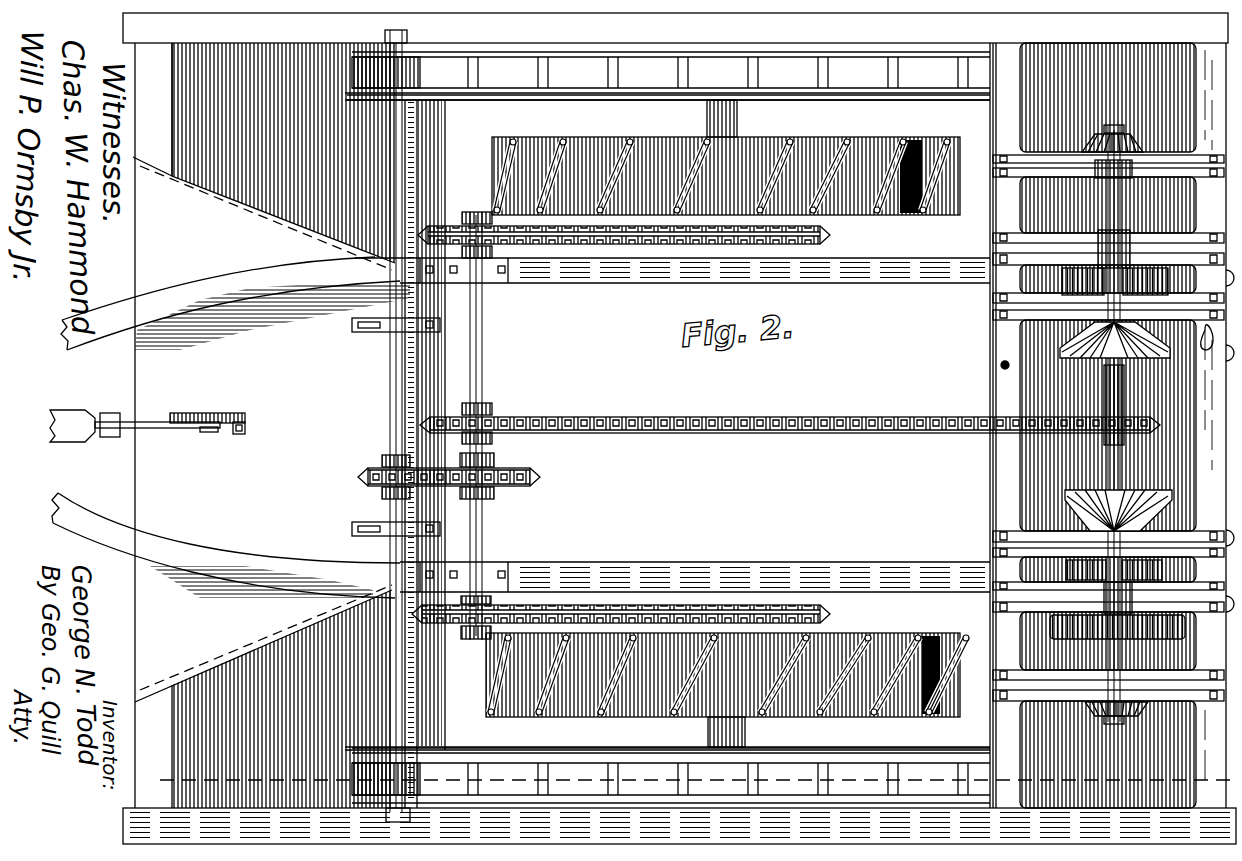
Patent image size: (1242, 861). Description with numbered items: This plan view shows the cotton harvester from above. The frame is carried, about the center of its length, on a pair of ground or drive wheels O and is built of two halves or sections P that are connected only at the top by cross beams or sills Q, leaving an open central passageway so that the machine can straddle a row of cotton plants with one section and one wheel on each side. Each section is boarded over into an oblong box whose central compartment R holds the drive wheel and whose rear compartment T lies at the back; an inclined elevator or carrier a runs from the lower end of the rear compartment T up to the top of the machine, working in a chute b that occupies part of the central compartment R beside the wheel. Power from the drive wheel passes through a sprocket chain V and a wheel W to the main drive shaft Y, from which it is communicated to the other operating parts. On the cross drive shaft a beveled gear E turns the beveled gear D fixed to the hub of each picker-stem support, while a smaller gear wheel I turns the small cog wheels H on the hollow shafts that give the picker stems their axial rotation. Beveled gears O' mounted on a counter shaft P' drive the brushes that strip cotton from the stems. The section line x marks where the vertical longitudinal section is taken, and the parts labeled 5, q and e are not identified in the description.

The elevator or carrier a is at (520, 770).
The passage or chute b is at (628, 100).
The central compartment R is at (667, 420).
The cross beams or sills Q is at (674, 425).
The hatched side panel 5 is at (300, 120).
The vertical plank q is at (436, 450).
The ground or drive wheels O is at (727, 427).
The beveled gears O' is at (1117, 142).
The rear compartment T is at (990, 232).
The frame sections P is at (672, 425).
The counter shaft P' is at (1094, 320).
The small cog wheels H is at (1065, 340).
The smaller gear wheel I is at (1062, 275).
The beveled gear E is at (1150, 358).
The beveled gear D is at (1113, 428).
The bolt e is at (1005, 378).
The main drive shaft Y is at (478, 540).
The wheel W is at (466, 640).
The sprocket chain V is at (598, 605).
The section line x is at (690, 780).